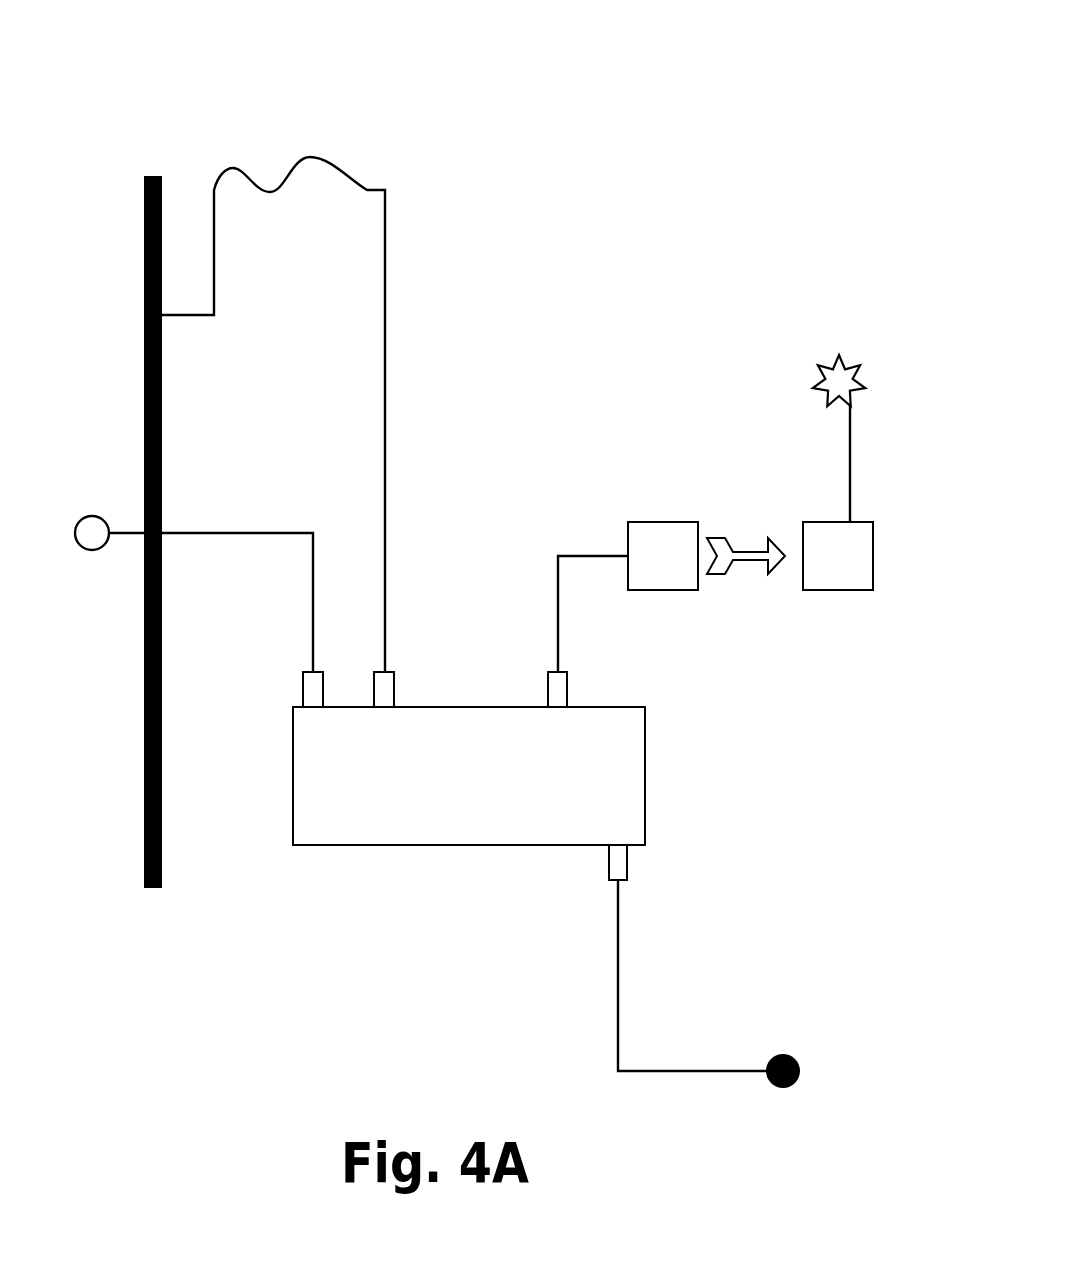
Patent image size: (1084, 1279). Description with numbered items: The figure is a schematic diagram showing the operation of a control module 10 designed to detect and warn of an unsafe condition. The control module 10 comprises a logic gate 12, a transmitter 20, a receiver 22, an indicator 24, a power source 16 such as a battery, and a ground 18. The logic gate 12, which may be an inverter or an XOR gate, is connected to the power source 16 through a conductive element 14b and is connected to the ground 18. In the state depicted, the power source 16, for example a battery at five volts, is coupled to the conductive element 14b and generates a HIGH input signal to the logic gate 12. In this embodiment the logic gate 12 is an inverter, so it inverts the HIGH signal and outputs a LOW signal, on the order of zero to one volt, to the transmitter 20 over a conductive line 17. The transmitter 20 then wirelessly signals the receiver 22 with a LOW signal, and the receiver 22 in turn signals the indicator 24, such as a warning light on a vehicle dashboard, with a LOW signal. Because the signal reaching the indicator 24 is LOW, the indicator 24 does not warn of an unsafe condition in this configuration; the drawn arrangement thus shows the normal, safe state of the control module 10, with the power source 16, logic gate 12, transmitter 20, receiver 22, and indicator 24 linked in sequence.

The control module 10 is at (620, 80).
The logic gate 12 is at (645, 777).
The conductive element 14b is at (342, 166).
The power source 16 is at (92, 518).
The conductive line 17 is at (552, 612).
The ground 18 is at (685, 1071).
The transmitter 20 is at (668, 521).
The receiver 22 is at (874, 560).
The indicator 24 is at (858, 365).